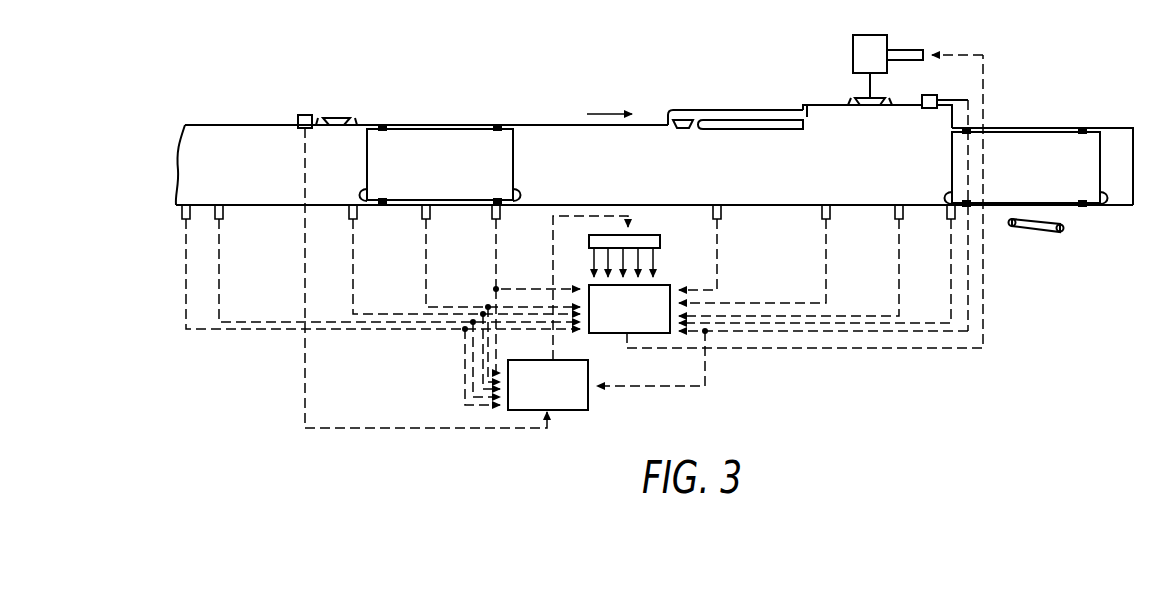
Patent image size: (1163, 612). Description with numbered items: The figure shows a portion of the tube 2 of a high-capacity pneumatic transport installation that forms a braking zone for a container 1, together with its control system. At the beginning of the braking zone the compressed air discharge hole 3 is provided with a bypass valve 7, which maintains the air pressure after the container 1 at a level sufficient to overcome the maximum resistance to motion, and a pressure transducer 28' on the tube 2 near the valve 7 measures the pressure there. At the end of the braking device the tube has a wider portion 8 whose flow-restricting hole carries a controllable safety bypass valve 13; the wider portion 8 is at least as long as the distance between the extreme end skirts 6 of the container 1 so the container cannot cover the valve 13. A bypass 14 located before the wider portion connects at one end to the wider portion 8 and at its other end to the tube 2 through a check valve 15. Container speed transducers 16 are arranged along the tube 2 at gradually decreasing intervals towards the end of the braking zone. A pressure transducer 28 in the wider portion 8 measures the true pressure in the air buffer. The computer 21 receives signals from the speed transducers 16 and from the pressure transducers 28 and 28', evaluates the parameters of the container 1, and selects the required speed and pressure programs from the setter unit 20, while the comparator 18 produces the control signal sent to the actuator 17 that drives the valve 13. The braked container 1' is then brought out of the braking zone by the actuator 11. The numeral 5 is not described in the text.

The container 1 is at (447, 143).
The container 1' is at (1039, 147).
The tube 2 is at (219, 135).
The air discharge hole 3 is at (358, 123).
The workpiece 5 is at (848, 100).
The end skirts 6 is at (497, 126).
The bypass valve 7 is at (338, 116).
The wider portion 8 is at (807, 100).
The actuator 11 is at (1038, 235).
The controllable safety bypass valve 13 is at (860, 97).
The bypass 14 is at (727, 116).
The check valve 15 is at (683, 118).
The container speed transducers 16 is at (188, 221).
The actuator 17 is at (910, 47).
The comparator 18 is at (629, 309).
The speed setter unit 20 is at (658, 242).
The computer 21 is at (548, 385).
The pressure transducer 28 is at (960, 198).
The pressure transducer 28' is at (422, 248).